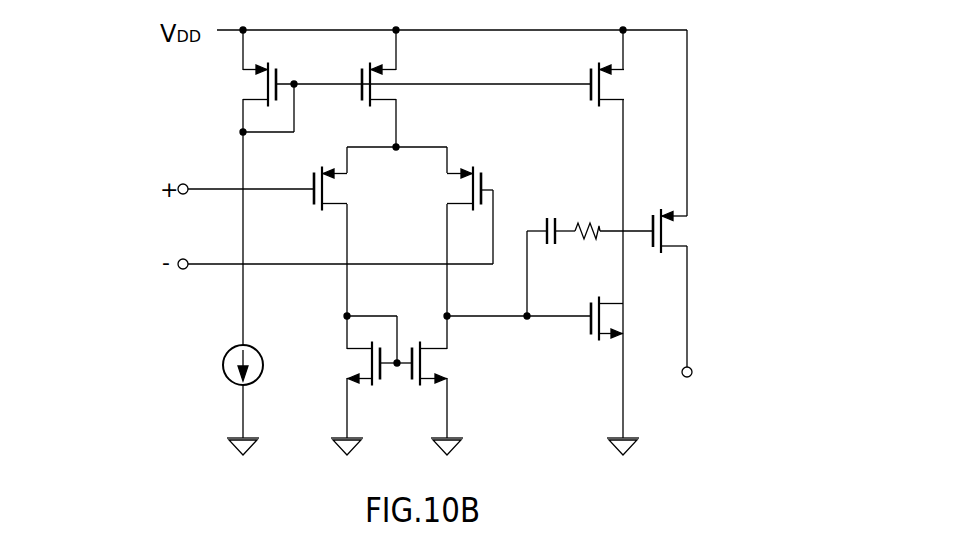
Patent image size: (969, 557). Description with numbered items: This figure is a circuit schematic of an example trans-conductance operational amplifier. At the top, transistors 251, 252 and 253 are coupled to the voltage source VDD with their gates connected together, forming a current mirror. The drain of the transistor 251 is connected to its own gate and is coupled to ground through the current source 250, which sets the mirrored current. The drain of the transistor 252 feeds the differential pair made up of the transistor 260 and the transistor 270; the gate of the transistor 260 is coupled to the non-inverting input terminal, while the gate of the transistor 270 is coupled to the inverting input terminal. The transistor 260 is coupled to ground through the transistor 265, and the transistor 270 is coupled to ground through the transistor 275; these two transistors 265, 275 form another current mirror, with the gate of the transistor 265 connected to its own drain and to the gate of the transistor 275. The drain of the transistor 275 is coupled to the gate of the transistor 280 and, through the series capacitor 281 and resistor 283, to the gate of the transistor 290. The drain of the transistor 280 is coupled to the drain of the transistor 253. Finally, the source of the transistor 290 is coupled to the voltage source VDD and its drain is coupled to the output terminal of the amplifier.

The current source 250 is at (220, 348).
The transistor 251 is at (240, 86).
The transistor 252 is at (385, 101).
The transistor 253 is at (628, 87).
The transistor 260 is at (331, 210).
The transistor 265 is at (340, 362).
The transistor 270 is at (440, 190).
The transistor 275 is at (457, 358).
The transistor 280 is at (610, 340).
The capacitor 281 is at (550, 214).
The resistor 283 is at (590, 246).
The transistor 290 is at (688, 232).